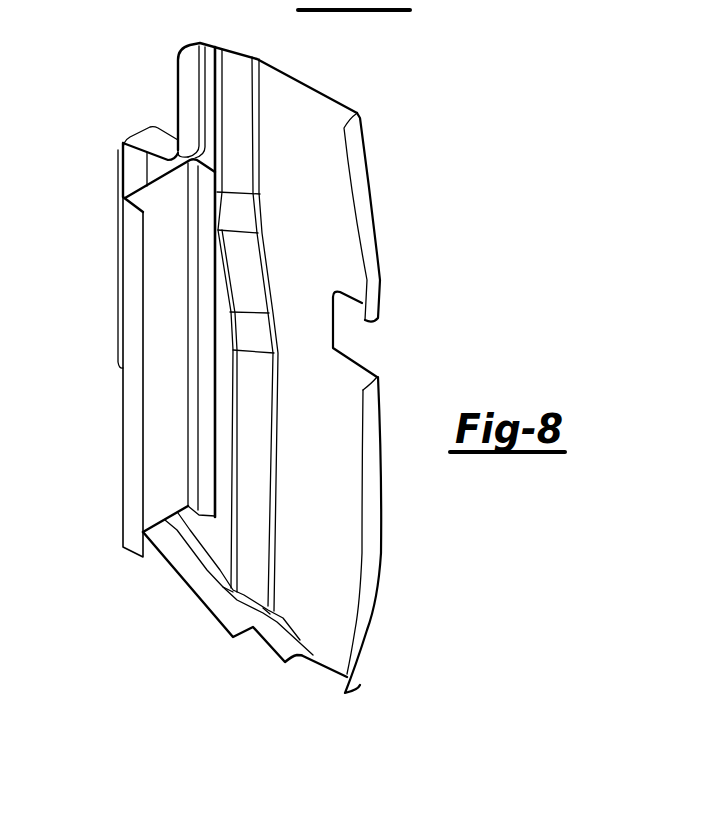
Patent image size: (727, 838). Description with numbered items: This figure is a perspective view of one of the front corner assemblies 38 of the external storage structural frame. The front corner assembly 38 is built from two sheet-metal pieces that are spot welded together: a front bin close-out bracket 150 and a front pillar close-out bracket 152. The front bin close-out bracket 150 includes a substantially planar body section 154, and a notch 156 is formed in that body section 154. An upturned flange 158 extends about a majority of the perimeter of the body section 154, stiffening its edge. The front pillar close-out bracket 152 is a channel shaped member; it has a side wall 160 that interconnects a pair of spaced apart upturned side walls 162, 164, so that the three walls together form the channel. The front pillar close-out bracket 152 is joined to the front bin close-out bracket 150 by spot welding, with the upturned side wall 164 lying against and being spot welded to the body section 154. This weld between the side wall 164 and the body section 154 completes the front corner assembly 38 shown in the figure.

The front corner assembly 38 is at (405, 160).
The front bin close-out bracket 150 is at (268, 73).
The front pillar close-out bracket 152 is at (126, 385).
The body section 154 is at (315, 88).
The notch 156 is at (357, 351).
The upturned flange 158 is at (371, 263).
The side wall 160 is at (133, 192).
The upturned side wall 162 is at (131, 438).
The upturned side wall 164 is at (207, 373).